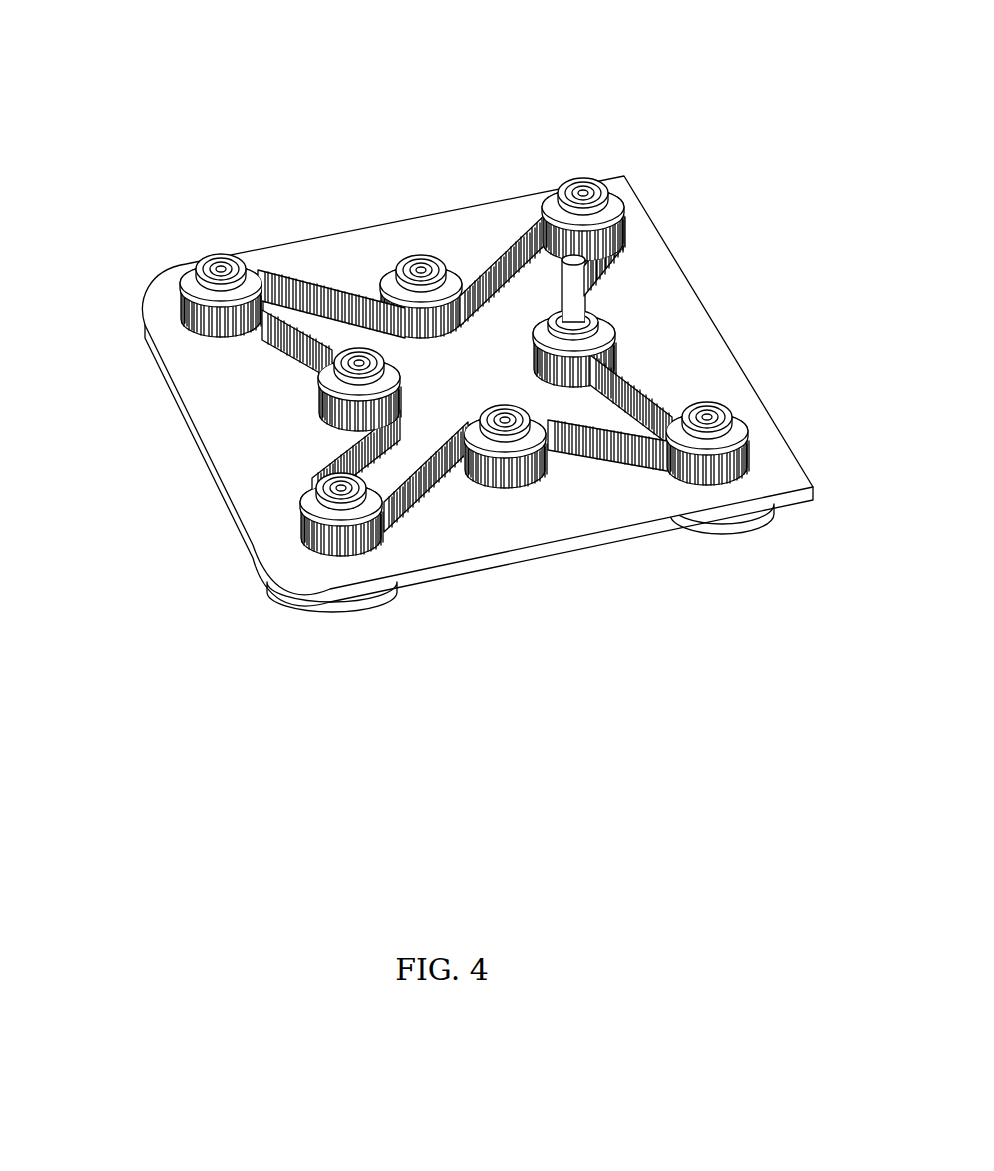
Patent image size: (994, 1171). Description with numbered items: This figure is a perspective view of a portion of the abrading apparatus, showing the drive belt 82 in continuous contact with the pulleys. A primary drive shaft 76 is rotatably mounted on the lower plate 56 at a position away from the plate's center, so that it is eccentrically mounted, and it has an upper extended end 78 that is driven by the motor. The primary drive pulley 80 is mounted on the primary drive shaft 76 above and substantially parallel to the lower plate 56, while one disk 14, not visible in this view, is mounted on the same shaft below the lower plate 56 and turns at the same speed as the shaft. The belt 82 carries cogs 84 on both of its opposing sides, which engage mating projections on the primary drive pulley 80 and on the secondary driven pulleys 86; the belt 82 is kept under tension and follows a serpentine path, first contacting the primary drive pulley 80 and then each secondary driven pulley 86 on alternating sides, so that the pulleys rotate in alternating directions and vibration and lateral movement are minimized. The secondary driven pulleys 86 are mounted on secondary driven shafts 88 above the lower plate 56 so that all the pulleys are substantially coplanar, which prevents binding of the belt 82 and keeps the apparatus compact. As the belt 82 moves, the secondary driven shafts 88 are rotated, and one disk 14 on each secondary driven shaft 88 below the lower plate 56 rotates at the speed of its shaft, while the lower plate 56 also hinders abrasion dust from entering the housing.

The disk 14 is at (727, 533).
The lower plate 56 is at (653, 530).
The primary drive shaft 76 is at (577, 291).
The upper extended end 78 is at (580, 278).
The primary drive pulley 80 is at (605, 335).
The belt 82 is at (307, 277).
The cogs 84 is at (607, 450).
The secondary driven pulleys 86 is at (190, 292).
The secondary driven shafts 88 is at (220, 268).